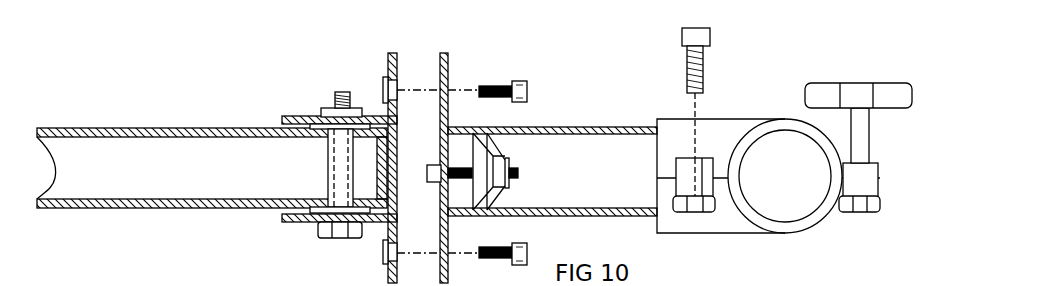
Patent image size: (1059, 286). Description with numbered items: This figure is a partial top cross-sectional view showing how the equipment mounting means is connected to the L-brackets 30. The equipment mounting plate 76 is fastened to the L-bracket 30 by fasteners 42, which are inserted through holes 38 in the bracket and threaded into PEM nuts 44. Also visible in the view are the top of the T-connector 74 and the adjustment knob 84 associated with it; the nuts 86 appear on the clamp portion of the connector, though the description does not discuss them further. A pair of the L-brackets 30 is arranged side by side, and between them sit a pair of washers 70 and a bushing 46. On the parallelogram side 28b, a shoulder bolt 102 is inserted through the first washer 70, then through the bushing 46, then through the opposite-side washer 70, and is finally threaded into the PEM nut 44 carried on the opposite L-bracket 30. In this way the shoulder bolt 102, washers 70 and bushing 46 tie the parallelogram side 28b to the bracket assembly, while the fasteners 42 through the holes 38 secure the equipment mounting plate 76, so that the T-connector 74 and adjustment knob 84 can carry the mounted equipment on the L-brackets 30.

The parallelogram side 28b is at (165, 181).
The L-bracket 30 is at (388, 58).
The hole 38 is at (439, 89).
The fastener 42 is at (527, 92).
The PEM nut 44 is at (320, 113).
The bushing 46 is at (333, 157).
The washer 70 is at (317, 213).
The T-connector 74 is at (728, 130).
The equipment mounting plate 76 is at (448, 70).
The adjustment knob 84 is at (867, 97).
The nut 86 is at (693, 212).
The shoulder bolt 102 is at (337, 96).